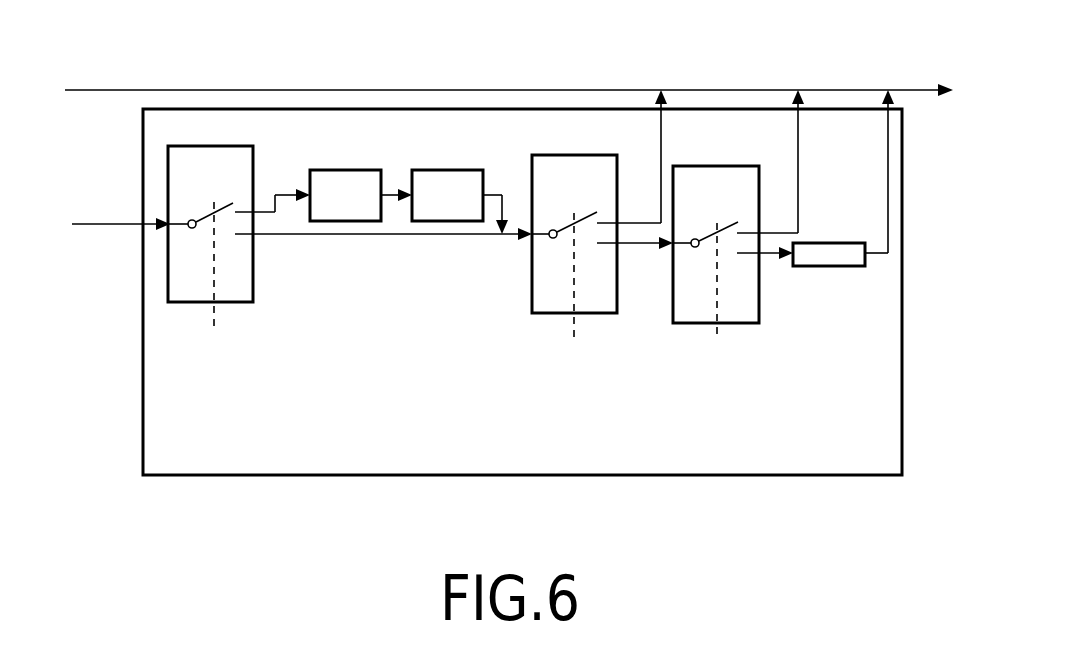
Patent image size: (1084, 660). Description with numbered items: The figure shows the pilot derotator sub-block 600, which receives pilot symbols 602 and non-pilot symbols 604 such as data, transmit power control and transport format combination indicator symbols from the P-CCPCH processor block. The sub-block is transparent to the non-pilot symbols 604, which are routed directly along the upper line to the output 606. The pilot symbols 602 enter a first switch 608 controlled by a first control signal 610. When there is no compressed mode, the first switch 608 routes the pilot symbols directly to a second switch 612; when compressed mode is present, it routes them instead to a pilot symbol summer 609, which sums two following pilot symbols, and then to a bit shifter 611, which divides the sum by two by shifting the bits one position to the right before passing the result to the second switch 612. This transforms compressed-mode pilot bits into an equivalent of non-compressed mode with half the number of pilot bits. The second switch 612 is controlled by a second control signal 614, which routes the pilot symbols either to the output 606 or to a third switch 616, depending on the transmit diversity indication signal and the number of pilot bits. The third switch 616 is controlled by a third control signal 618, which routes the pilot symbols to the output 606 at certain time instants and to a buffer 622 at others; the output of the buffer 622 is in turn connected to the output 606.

The pilot derotator sub-block 600 is at (310, 457).
The pilot symbols 602 is at (120, 227).
The non-pilot symbols 604 is at (108, 90).
The output 606 is at (923, 88).
The first switch 608 is at (185, 303).
The pilot symbol summer 609 is at (330, 168).
The first control signal 610 is at (214, 320).
The bit shifter 611 is at (427, 168).
The second switch 612 is at (547, 315).
The second control signal 614 is at (574, 325).
The third switch 616 is at (692, 327).
The third control signal 618 is at (718, 342).
The buffer 622 is at (802, 268).